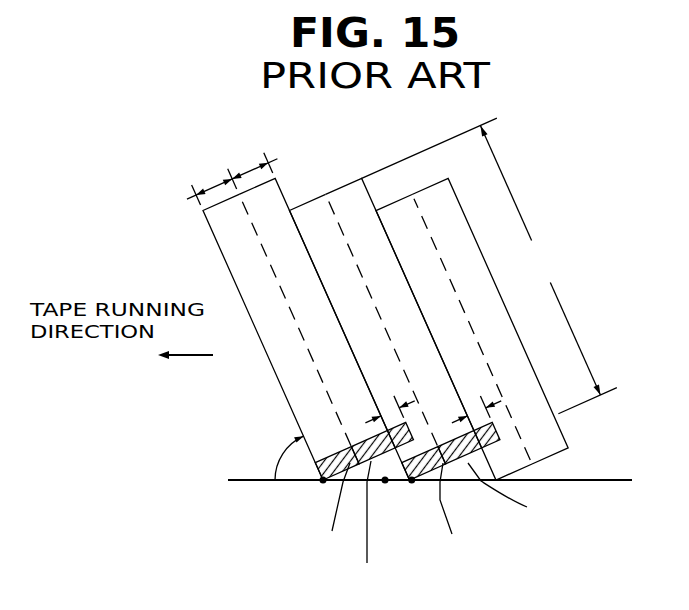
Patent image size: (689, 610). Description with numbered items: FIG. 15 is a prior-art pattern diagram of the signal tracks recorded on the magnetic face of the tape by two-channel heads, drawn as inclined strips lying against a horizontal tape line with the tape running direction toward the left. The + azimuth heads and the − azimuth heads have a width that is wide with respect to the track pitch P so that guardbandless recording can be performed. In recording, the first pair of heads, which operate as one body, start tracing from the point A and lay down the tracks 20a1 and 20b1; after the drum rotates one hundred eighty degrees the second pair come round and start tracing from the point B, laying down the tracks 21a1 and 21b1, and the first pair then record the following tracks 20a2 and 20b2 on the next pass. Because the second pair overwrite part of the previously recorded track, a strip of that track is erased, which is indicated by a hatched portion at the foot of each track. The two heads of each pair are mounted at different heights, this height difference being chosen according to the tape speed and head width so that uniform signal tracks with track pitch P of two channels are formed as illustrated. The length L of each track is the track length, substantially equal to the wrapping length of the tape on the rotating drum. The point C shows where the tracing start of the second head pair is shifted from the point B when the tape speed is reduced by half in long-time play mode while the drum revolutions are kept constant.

The signal track of + azimuth head 20a1 is at (281, 337).
The signal track of − azimuth head 20b1 is at (317, 321).
The signal track of + azimuth head 21a1 is at (367, 337).
The signal track of − azimuth head 21b1 is at (404, 321).
The signal track of + azimuth head 20a2 is at (454, 337).
The signal track of − azimuth head 20b2 is at (490, 321).
The tracing start point A is at (323, 481).
The tracing start point B is at (412, 483).
The shifted tracing start point C is at (386, 483).
The track pitch P is at (226, 165).
The track length L is at (489, 283).